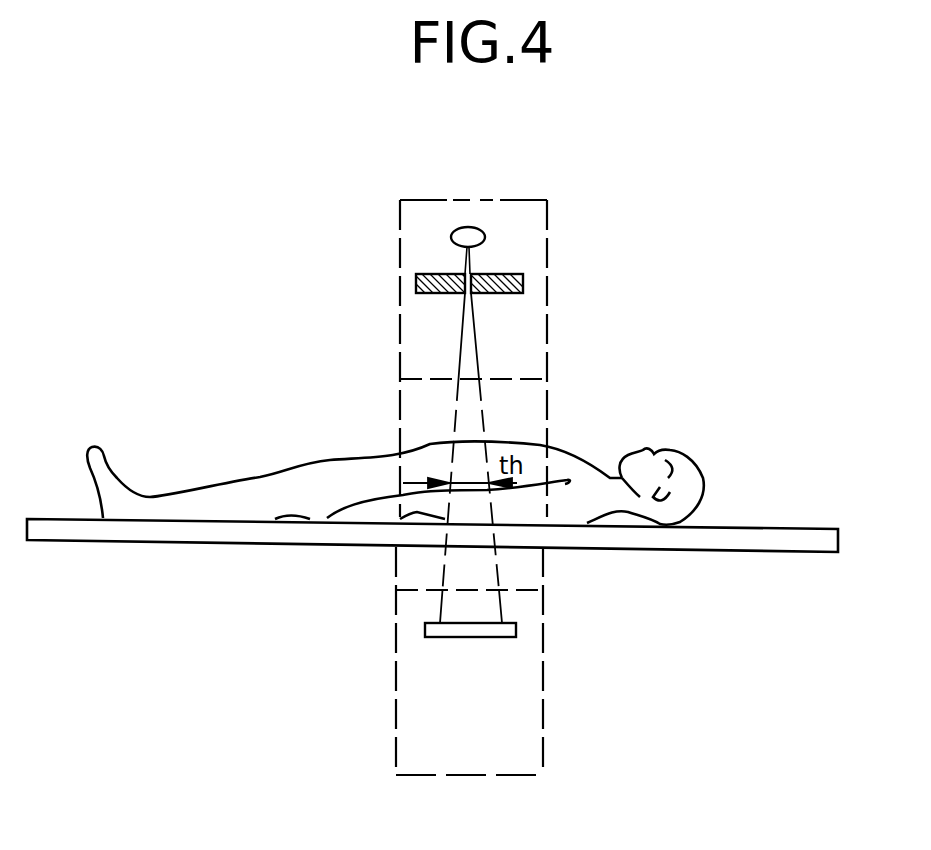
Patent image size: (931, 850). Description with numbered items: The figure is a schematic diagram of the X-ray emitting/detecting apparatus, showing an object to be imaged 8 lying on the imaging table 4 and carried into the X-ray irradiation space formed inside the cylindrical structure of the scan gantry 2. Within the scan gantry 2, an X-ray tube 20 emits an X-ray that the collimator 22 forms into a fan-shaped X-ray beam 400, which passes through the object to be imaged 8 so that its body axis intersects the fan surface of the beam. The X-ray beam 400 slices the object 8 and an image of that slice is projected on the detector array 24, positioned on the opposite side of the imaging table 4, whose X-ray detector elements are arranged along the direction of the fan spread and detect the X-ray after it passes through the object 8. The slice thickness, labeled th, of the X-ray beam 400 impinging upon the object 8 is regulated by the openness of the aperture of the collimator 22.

The scan gantry 2 is at (445, 197).
The X-ray tube 20 is at (476, 228).
The collimator 22 is at (512, 273).
The X-ray beam 400 is at (484, 417).
The object to be imaged 8 is at (680, 460).
The imaging table 4 is at (737, 537).
The detector array 24 is at (502, 628).